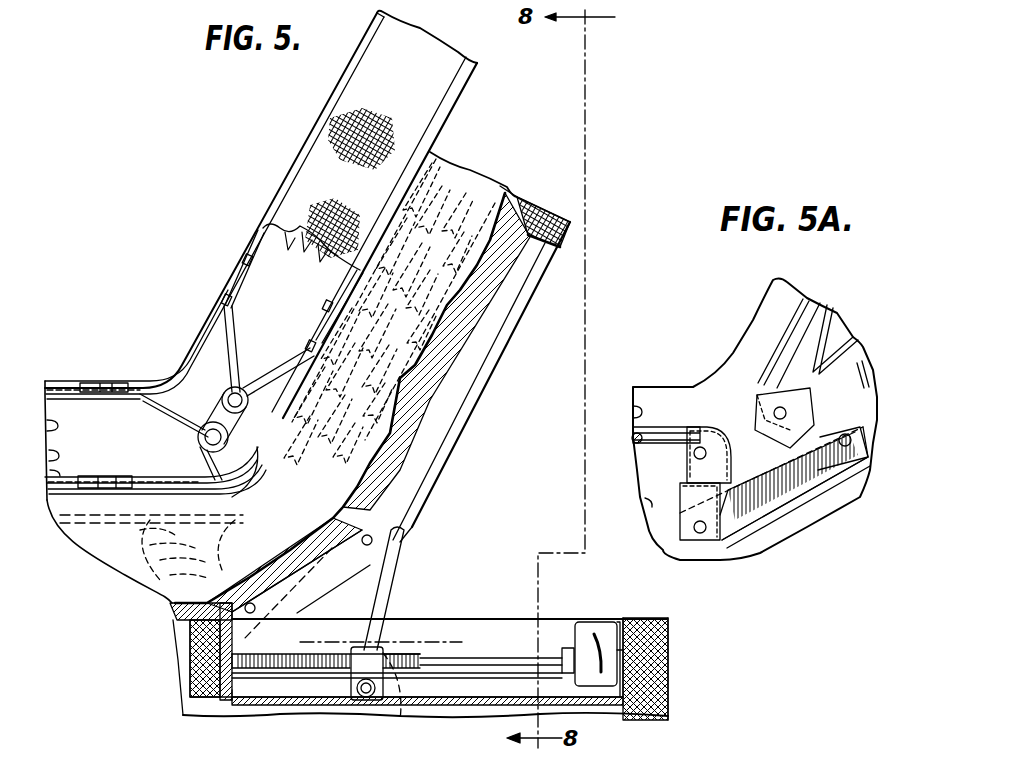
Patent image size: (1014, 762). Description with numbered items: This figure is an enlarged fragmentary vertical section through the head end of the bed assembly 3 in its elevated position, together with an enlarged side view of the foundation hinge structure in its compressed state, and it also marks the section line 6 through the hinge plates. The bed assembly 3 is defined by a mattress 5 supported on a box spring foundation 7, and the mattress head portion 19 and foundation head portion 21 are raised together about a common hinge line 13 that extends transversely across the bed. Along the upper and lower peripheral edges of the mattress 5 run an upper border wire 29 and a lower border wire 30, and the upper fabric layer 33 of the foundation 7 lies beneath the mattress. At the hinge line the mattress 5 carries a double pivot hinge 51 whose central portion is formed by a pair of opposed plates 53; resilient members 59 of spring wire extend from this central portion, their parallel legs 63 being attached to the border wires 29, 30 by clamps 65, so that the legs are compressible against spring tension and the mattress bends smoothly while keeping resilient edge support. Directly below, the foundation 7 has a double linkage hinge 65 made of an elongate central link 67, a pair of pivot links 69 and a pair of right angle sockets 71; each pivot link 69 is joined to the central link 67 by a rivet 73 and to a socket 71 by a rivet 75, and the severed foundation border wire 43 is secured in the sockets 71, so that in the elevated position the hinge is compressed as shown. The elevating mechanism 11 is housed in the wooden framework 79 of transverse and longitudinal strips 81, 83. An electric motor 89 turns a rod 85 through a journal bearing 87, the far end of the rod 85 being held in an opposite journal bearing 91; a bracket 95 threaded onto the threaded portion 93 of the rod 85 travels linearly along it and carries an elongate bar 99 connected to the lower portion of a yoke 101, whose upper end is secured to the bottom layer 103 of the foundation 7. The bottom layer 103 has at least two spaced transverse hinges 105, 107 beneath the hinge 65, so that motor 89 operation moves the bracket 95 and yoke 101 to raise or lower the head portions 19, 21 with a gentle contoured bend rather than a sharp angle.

In FIG. 5, the bed assembly 3 is at (293, 150).
In FIG. 5, the mattress 5 is at (408, 16).
In FIG. 5, the section line 6 is at (283, 355).
In FIG. 5, the box spring foundation 7 is at (462, 160).
In FIG. 5A, the box spring foundation 7 is at (805, 284).
In FIG. 5, the elevating mechanism 11 is at (405, 546).
In FIG. 5, the common hinge line 13 is at (173, 365).
In FIG. 5, the mattress head portion 19 is at (440, 66).
In FIG. 5, the foundation head portion 21 is at (486, 192).
In FIG. 5, the upper border wire 29 is at (60, 386).
In FIG. 5, the lower border wire 30 is at (50, 460).
In FIG. 5, the upper layer 33 is at (118, 560).
In FIG. 5A, the upper layer 33 is at (666, 385).
In FIG. 5A, the border wire 43 is at (781, 362).
In FIG. 5, the double pivot hinge 51 is at (222, 402).
In FIG. 5, the opposed plates 53 is at (228, 458).
In FIG. 5, the resilient members 59 is at (297, 373).
In FIG. 5, the parallel legs 63 is at (326, 300).
In FIG. 5, the clamps / double linkage hinge 65 is at (247, 263).
In FIG. 5A, the clamps / double linkage hinge 65 is at (773, 518).
In FIG. 5A, the central link 67 is at (828, 510).
In FIG. 5A, the pivot links 69 is at (822, 425).
In FIG. 5A, the right angle sockets 71 is at (758, 420).
In FIG. 5A, the rivet 73 is at (705, 535).
In FIG. 5A, the rivet 75 is at (712, 453).
In FIG. 5, the wooden framework 79 is at (650, 612).
In FIG. 5, the transverse wooden strips 81 is at (190, 688).
In FIG. 5, the longitudinal wooden strips 83 is at (490, 642).
In FIG. 5, the rod 85 is at (460, 680).
In FIG. 5, the journal bearing 87 is at (567, 648).
In FIG. 5, the electric motor 89 is at (600, 626).
In FIG. 5, the journal bearing 91 is at (233, 700).
In FIG. 5, the threaded portion 93 is at (316, 680).
In FIG. 5, the bracket 95 is at (402, 722).
In FIG. 5, the elongate bar 99 is at (366, 698).
In FIG. 5, the yoke 101 is at (388, 588).
In FIG. 5, the bottom layer 103 is at (473, 327).
In FIG. 5, the transverse hinge 105 is at (256, 610).
In FIG. 5, the transverse hinge 107 is at (398, 544).